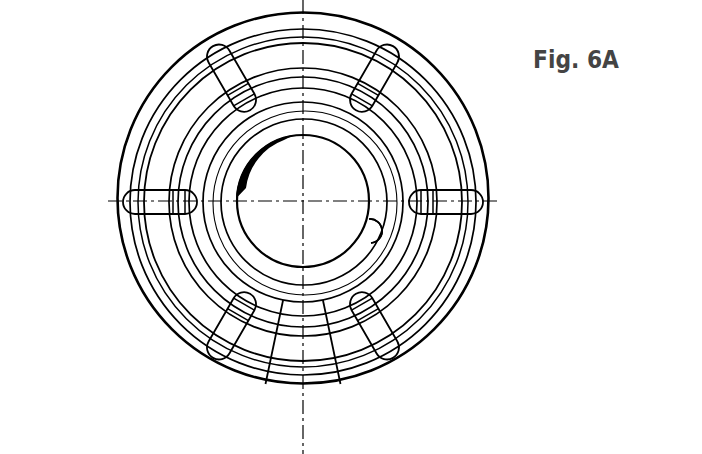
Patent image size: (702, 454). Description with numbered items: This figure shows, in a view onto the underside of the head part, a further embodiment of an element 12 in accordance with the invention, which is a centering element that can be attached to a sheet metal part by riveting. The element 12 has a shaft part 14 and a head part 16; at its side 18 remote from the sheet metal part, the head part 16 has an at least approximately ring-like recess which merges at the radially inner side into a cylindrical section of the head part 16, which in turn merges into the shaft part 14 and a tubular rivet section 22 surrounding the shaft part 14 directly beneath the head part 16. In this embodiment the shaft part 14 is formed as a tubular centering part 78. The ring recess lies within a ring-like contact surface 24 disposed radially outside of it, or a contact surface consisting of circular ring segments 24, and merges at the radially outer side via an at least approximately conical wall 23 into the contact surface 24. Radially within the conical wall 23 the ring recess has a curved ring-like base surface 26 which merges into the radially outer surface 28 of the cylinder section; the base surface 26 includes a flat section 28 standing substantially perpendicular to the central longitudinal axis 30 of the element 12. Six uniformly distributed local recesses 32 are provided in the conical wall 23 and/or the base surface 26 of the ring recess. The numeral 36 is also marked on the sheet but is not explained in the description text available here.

The element 12 is at (400, 169).
The shaft part 14 is at (342, 380).
The head part 16 is at (440, 72).
The side 18 is at (477, 163).
The rivet section 22 is at (268, 380).
The conical wall 23 is at (413, 297).
The contact surface 24 is at (445, 238).
The base surface 26 is at (185, 237).
The flat section 28 is at (405, 137).
The central longitudinal axis 30 is at (303, 202).
The local recess 32 is at (216, 50).
The sheet 36 is at (446, 443).
The tubular centering part 78 is at (382, 221).